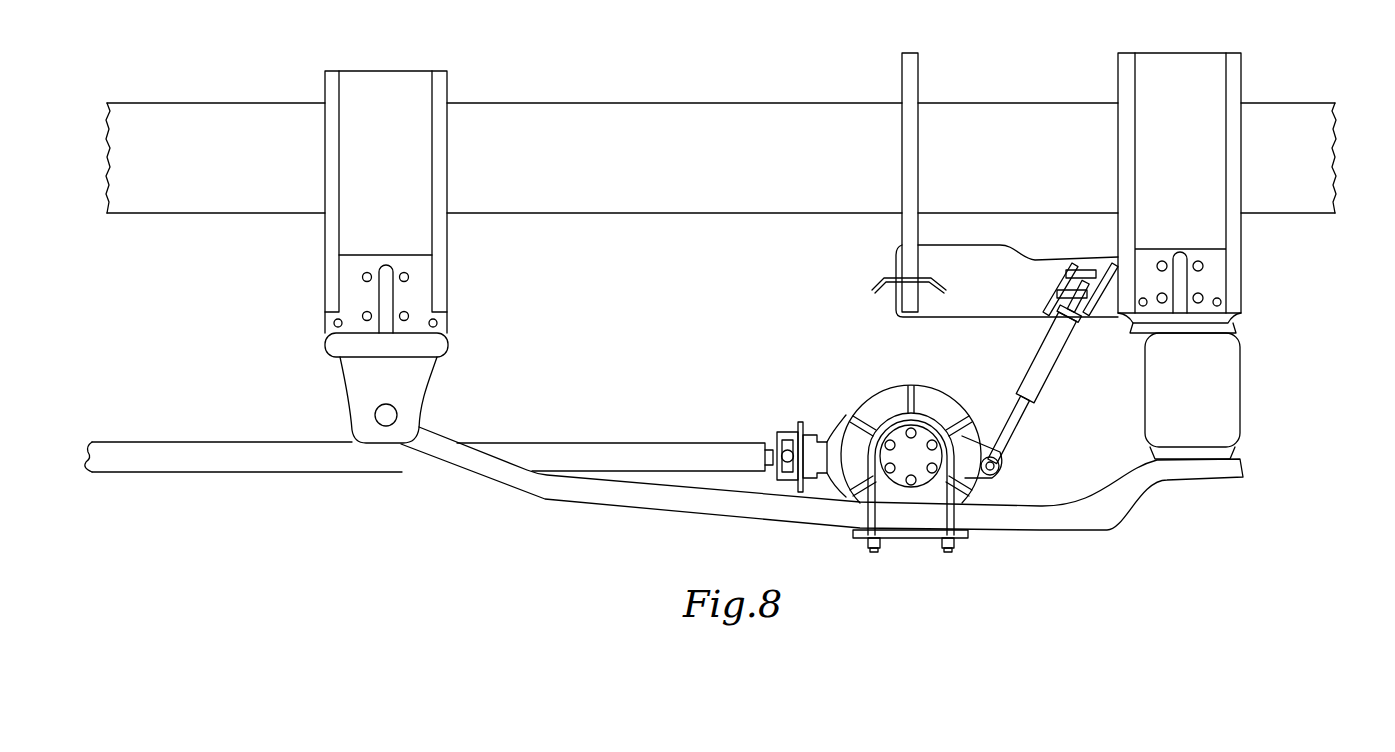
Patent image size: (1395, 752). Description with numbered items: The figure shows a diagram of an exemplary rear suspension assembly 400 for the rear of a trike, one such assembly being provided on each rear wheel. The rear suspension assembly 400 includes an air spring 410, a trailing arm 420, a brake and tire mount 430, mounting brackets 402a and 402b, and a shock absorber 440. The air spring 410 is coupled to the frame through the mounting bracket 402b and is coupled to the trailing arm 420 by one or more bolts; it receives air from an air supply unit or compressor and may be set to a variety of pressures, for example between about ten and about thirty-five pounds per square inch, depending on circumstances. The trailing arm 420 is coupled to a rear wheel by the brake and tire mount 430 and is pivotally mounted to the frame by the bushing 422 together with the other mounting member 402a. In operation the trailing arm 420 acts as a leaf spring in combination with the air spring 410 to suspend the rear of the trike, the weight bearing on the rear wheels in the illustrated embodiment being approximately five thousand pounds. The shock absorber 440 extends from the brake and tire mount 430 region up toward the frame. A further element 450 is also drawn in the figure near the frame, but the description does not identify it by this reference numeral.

The rear suspension assembly 400 is at (692, 244).
The mounting member 402a is at (440, 272).
The mounting bracket 402b is at (1218, 273).
The air spring 410 is at (1230, 390).
The trailing arm 420 is at (630, 502).
The bushing 422 is at (382, 411).
The brake and tire mount 430 is at (864, 450).
The shock absorber 440 is at (1045, 373).
The shock mount hanger 450 is at (877, 281).